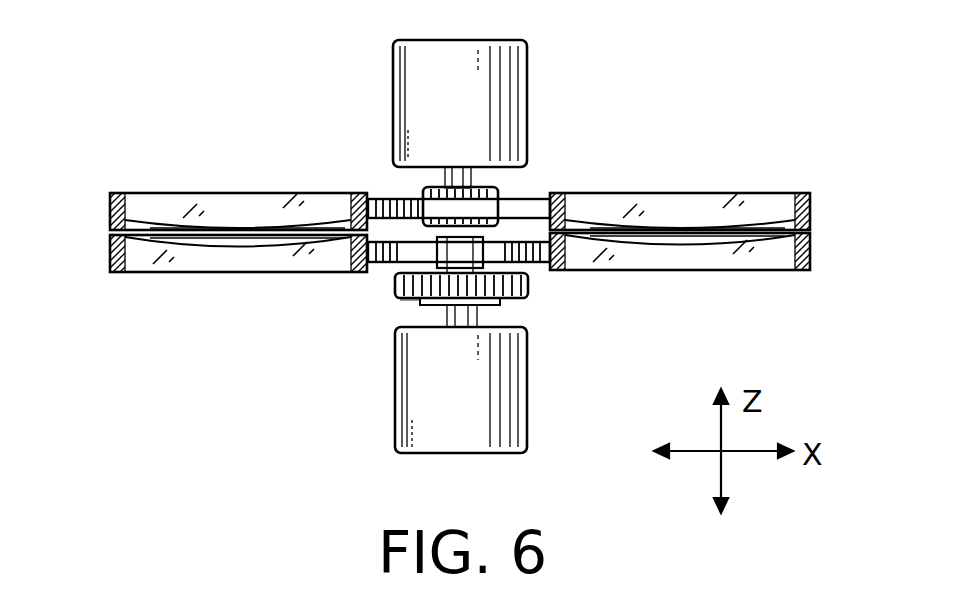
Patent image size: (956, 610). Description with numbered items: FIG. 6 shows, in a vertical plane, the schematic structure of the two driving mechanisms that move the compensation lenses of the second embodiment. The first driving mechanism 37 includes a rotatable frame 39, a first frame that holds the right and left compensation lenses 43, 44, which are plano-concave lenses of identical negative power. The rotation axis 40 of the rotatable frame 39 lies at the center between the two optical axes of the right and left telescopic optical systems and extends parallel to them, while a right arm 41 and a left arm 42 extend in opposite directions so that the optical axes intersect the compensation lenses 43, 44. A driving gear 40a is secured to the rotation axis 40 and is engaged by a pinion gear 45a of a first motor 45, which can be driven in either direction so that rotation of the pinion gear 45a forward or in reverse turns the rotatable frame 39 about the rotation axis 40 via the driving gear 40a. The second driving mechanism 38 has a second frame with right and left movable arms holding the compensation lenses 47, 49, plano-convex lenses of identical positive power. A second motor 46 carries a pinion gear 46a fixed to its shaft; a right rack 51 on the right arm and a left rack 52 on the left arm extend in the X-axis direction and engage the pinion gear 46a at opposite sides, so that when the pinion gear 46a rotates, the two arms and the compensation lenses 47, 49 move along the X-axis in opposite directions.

The first driving mechanism 37 is at (157, 296).
The second driving mechanism 38 is at (170, 172).
The rotatable frame 39 is at (405, 259).
The rotation axis 40 is at (463, 315).
The driving gear 40a is at (401, 300).
The right arm 41 is at (375, 272).
The left arm 42 is at (537, 267).
The compensation lens 43 is at (238, 270).
The compensation lens 44 is at (700, 270).
The first motor 45 is at (526, 403).
The pinion gear 45a is at (484, 305).
The second motor 46 is at (526, 104).
The pinion gear 46a is at (440, 190).
The compensation lens 47 is at (220, 192).
The compensation lens 49 is at (680, 192).
The right rack 51 is at (390, 193).
The left rack 52 is at (526, 197).